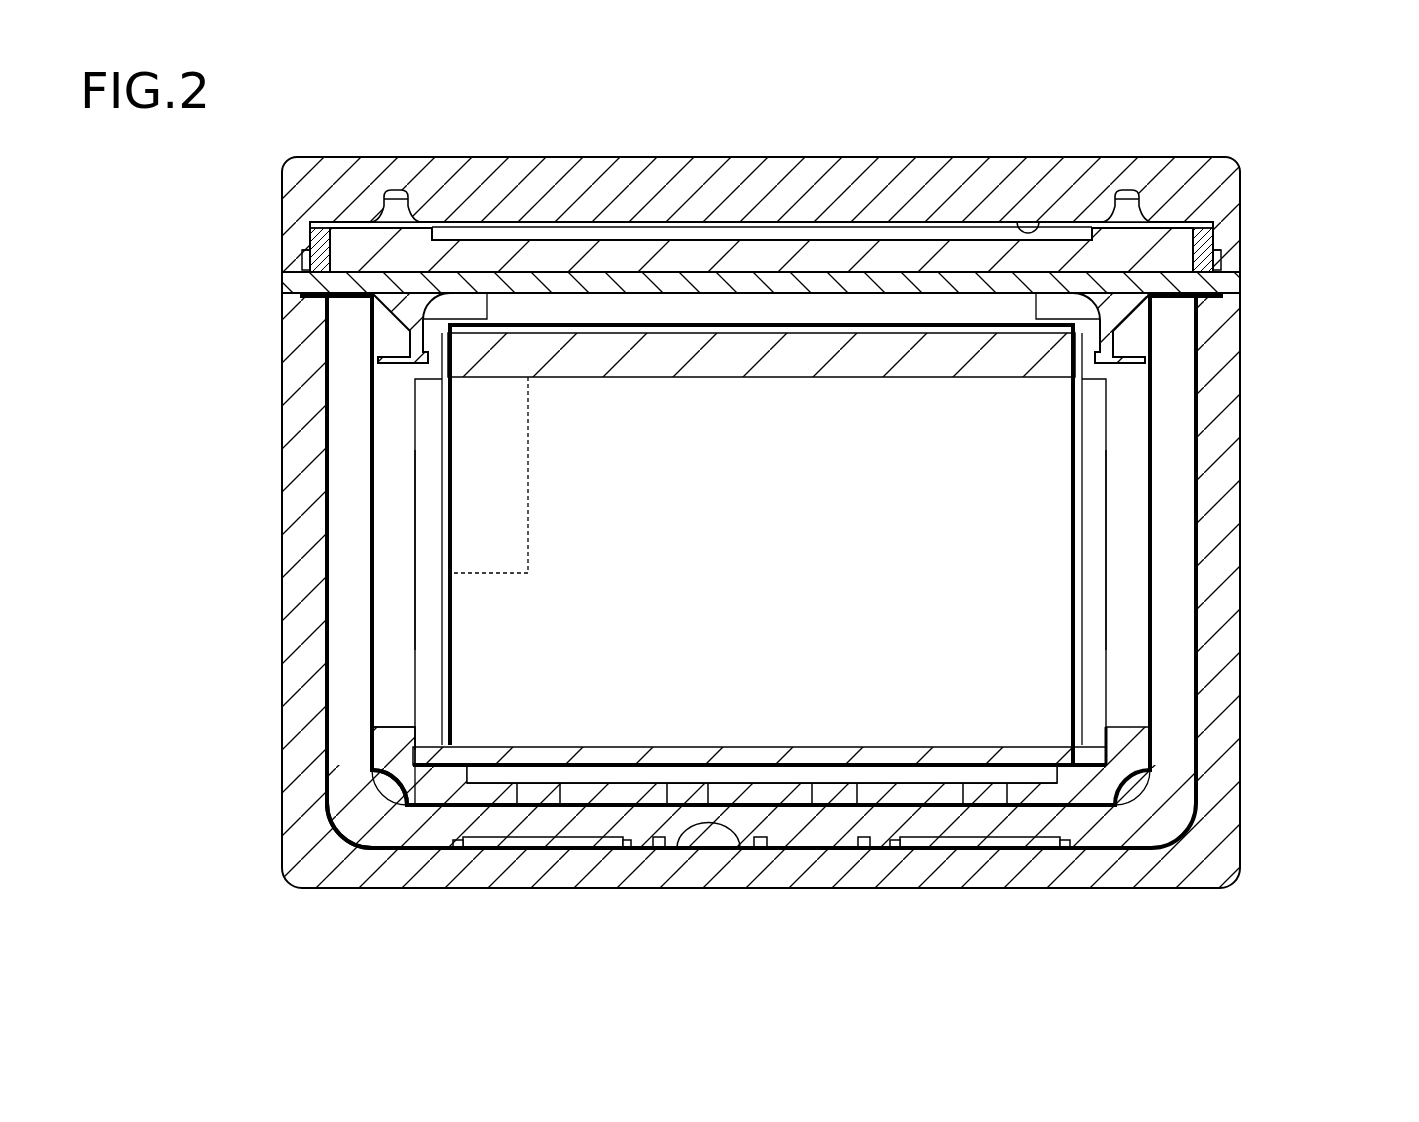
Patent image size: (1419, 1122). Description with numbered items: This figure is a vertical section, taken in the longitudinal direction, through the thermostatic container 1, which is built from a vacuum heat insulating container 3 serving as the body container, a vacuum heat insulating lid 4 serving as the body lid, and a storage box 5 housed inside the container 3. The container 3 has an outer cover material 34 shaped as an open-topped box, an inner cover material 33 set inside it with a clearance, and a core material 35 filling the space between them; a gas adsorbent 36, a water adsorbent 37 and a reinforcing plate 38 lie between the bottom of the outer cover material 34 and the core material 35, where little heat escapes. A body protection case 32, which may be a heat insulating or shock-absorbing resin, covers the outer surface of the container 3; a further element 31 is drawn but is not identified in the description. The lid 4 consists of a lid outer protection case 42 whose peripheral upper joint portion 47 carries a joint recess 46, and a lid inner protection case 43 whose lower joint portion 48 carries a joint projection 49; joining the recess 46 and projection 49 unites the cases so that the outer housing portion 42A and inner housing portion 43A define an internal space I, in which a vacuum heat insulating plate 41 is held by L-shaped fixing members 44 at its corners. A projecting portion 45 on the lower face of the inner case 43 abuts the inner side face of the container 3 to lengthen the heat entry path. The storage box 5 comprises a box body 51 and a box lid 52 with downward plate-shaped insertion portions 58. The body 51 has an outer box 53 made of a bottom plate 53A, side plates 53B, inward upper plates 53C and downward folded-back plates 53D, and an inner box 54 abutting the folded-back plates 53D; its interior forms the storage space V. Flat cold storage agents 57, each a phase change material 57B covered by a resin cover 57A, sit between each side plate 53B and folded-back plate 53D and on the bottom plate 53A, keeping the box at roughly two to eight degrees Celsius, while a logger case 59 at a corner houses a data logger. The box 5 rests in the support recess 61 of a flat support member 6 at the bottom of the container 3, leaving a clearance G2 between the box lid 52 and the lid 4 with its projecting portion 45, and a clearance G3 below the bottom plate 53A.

The thermostatic container 1 is at (790, 119).
The vacuum heat insulating container 3 is at (265, 372).
The vacuum heat insulating lid 4 is at (261, 199).
The storage box 5 is at (1128, 688).
The support member 6 is at (1120, 752).
The outer wall of vessel 31 is at (340, 440).
The body protection case 32 is at (348, 470).
The inner cover material 33 is at (385, 640).
The outer cover material 34 is at (340, 690).
The core material 35 is at (350, 716).
The gas adsorbent 36 is at (525, 790).
The water adsorbent 37 is at (605, 795).
The reinforcing plate 38 is at (705, 830).
The vacuum heat insulating plate 41 is at (822, 260).
The lid outer protection case 42 is at (288, 178).
The outer housing portion 42A is at (1030, 230).
The lid inner protection case 43 is at (300, 283).
The inner housing portion 43A is at (948, 268).
The fixing members 44 is at (393, 200).
The projecting portion 45 is at (388, 312).
The joint recess 46 is at (296, 232).
The upper joint portion 47 is at (318, 248).
The lower joint portion 48 is at (308, 262).
The joint projection 49 is at (304, 262).
The box body 51 is at (1118, 405).
The box lid 52 is at (1125, 358).
The outer box 53 is at (1112, 410).
The bottom plate 53A is at (1040, 775).
The side plates 53B is at (398, 680).
The upper plate 53C is at (384, 358).
The folded-back plate 53D is at (430, 540).
The inner box 54 is at (1082, 610).
The cold storage agents 57 is at (430, 600).
The resin cover 57A is at (820, 327).
The phase change material 57B is at (730, 355).
The insertion portions 58 is at (440, 490).
The logger case 59 is at (436, 565).
The support recess 61 is at (420, 725).
The clearance G2 is at (531, 305).
The clearance G3 is at (880, 775).
The storage space V is at (637, 505).
The internal space I is at (725, 240).